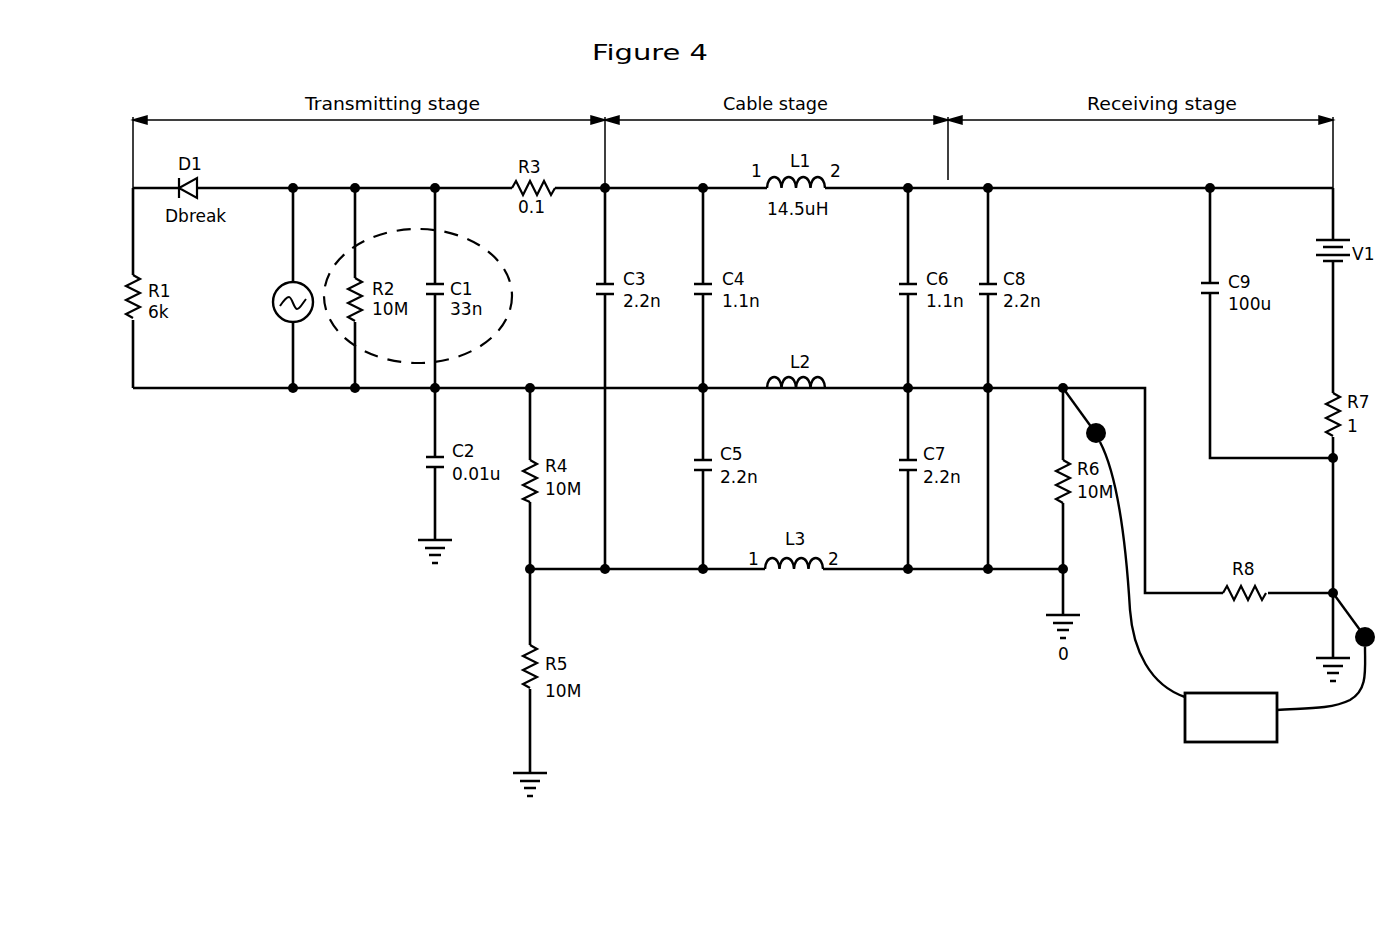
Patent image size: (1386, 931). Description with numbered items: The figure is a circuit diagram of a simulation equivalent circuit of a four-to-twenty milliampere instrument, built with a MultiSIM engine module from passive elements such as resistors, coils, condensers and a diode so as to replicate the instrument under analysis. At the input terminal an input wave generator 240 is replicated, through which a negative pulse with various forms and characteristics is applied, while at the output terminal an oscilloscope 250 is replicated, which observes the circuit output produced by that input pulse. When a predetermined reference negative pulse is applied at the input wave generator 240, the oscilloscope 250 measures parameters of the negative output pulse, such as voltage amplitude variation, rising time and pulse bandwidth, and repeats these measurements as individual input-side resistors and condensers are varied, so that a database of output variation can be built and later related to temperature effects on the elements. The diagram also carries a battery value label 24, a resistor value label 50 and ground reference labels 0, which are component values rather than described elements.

The input wave generator 240 is at (284, 318).
The oscilloscope 250 is at (1185, 732).
The battery V1 (24 V) 24 is at (1319, 252).
The resistor R8 (50 ohm) 50 is at (1244, 605).
The ground 0 is at (530, 796).